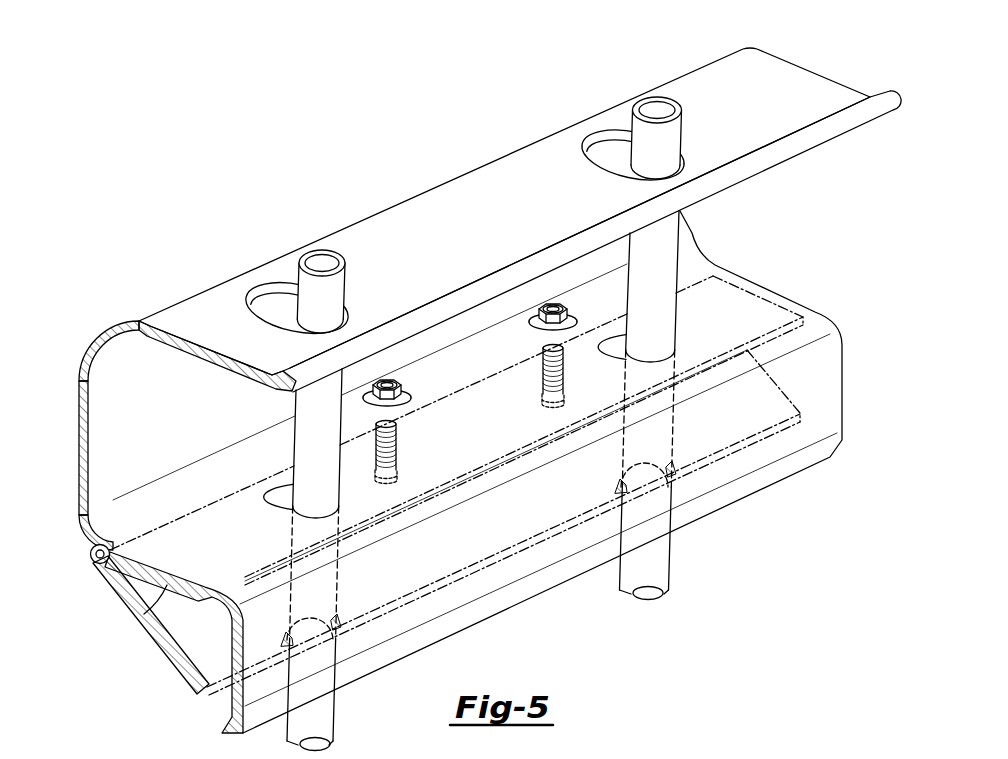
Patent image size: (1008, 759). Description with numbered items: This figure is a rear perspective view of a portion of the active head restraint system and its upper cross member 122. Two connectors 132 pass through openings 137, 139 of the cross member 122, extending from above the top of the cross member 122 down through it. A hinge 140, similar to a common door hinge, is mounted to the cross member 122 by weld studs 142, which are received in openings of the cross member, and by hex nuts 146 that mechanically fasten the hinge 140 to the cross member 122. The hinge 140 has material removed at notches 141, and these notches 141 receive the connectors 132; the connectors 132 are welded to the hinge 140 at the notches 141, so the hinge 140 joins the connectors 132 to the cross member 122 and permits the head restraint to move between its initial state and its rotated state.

The cross member 122 is at (393, 215).
The connectors 132 is at (337, 282).
The openings 137 is at (265, 292).
The openings 139 is at (278, 495).
The hinge 140 is at (145, 618).
The notches 141 is at (315, 612).
The weld studs 142 is at (395, 447).
The hex nuts 146 is at (400, 390).